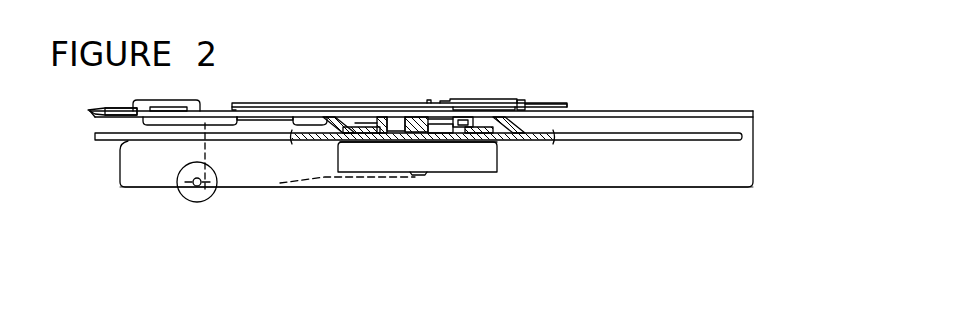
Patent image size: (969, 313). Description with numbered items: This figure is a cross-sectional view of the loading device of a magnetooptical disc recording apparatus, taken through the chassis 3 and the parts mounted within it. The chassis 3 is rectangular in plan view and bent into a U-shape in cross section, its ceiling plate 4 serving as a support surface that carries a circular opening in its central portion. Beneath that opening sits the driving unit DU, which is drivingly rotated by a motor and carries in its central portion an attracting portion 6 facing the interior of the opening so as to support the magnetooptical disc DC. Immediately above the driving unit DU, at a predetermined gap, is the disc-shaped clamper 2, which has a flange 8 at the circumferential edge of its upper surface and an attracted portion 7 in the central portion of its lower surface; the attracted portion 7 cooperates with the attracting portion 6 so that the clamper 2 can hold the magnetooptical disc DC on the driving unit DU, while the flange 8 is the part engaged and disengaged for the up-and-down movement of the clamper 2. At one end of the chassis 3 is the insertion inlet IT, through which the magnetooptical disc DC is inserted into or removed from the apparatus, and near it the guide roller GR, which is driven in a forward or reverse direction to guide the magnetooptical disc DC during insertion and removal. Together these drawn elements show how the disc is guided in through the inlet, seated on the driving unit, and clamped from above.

The clamper 2 is at (350, 122).
The chassis 3 is at (757, 140).
The ceiling plate 4 is at (643, 110).
The attracting portion 6 is at (446, 121).
The attracted portion 7 is at (427, 143).
The flange 8 is at (291, 111).
The insertion inlet IT is at (106, 186).
The guide roller GR is at (203, 199).
The driving unit DU is at (462, 163).
The magnetooptical disc DC is at (590, 143).